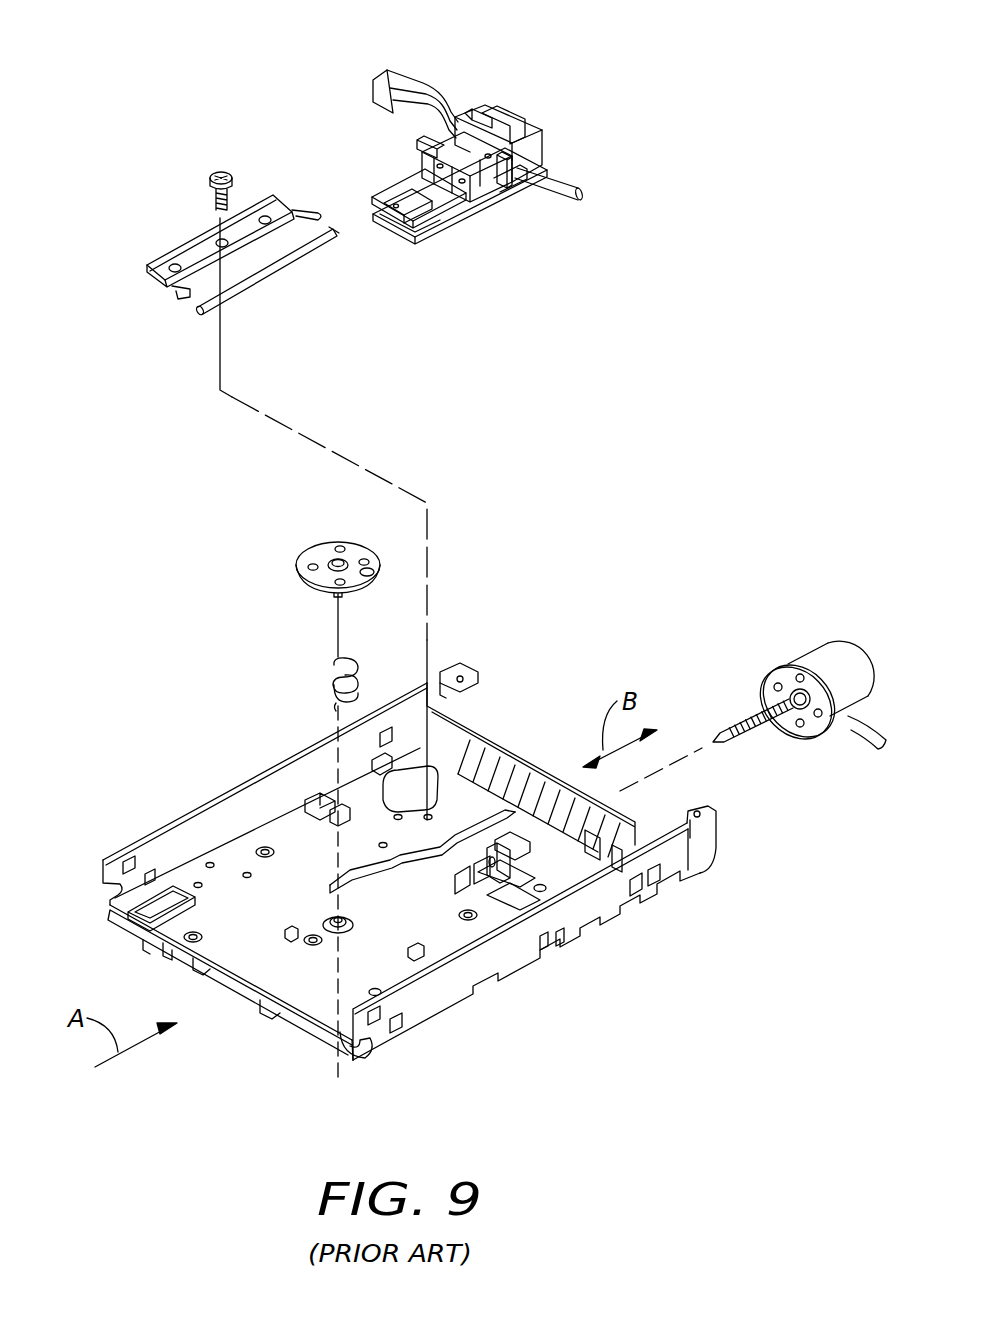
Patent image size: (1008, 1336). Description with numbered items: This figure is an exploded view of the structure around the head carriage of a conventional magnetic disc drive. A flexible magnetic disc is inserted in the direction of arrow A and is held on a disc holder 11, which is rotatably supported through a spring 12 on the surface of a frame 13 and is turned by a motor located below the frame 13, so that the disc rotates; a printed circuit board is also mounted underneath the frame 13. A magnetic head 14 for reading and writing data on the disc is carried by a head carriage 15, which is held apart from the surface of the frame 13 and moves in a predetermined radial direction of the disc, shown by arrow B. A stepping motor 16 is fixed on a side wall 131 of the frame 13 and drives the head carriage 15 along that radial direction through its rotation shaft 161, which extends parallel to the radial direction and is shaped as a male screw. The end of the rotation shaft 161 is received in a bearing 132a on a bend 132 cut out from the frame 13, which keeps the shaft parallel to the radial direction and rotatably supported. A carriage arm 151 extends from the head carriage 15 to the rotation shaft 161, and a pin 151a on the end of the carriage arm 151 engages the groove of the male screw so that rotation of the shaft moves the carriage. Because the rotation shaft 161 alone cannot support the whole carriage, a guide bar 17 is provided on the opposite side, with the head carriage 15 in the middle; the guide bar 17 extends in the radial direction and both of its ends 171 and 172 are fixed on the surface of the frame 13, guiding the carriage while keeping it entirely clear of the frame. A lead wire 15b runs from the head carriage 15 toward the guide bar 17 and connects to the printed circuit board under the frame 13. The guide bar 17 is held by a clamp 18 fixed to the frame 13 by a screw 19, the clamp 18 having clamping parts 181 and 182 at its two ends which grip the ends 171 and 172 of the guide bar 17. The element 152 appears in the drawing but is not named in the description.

The disc holder 11 is at (313, 553).
The spring 12 is at (333, 667).
The frame 13 is at (132, 928).
The side wall 131 is at (475, 728).
The bend 132 is at (525, 868).
The bearing 132a is at (497, 878).
The magnetic head 14 is at (407, 207).
The head carriage 15 is at (463, 217).
The lead wire 15b is at (418, 80).
The carriage arm 151 is at (530, 183).
The pin 151a is at (587, 193).
The carriage block 152 is at (422, 142).
The stepping motor 16 is at (813, 643).
The rotation shaft 161 is at (747, 727).
The guide bar 17 is at (247, 287).
The end of guide bar 171 is at (198, 317).
The end of guide bar 172 is at (320, 247).
The clamp 18 is at (208, 228).
The clamping part 181 is at (177, 295).
The clamping part 182 is at (310, 210).
The screw 19 is at (220, 170).